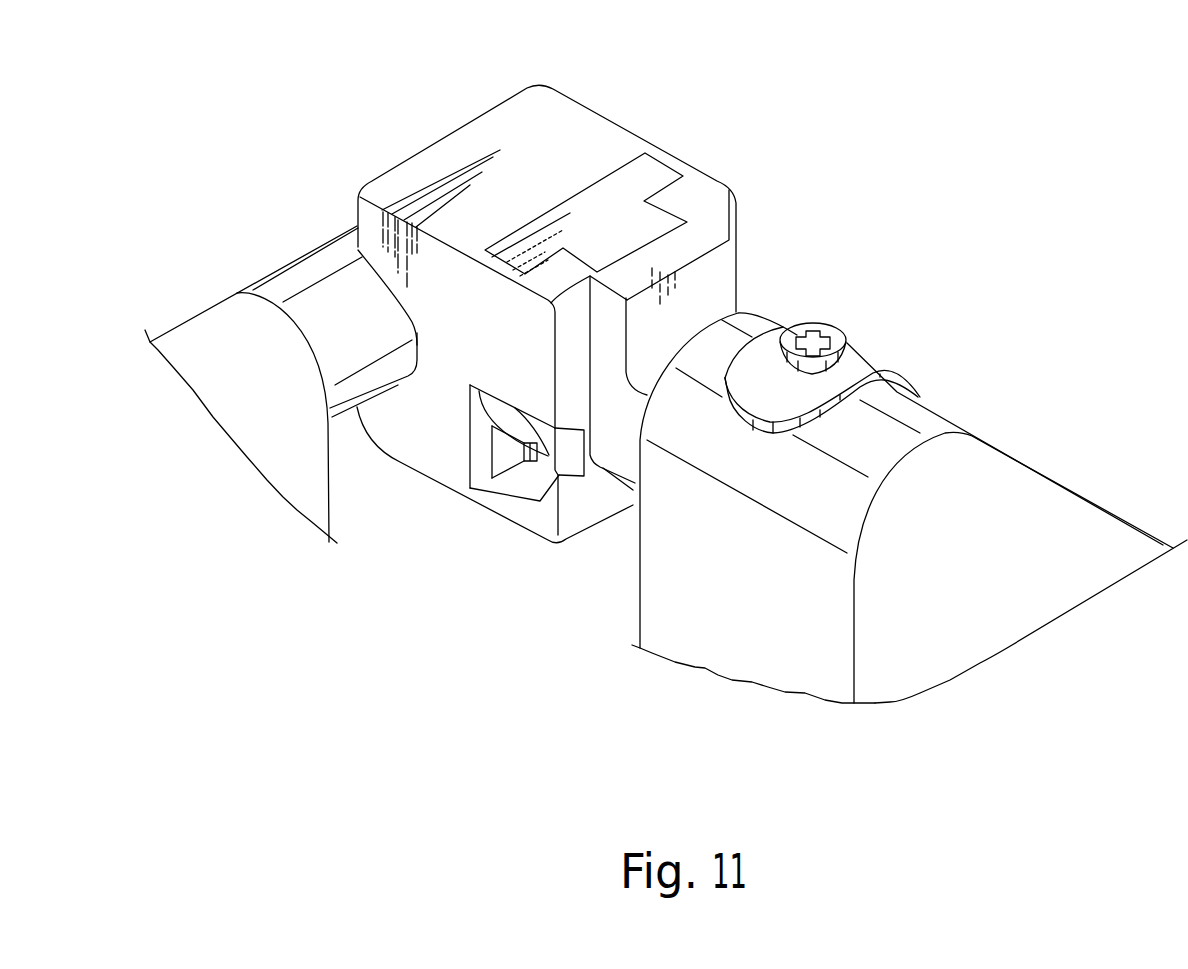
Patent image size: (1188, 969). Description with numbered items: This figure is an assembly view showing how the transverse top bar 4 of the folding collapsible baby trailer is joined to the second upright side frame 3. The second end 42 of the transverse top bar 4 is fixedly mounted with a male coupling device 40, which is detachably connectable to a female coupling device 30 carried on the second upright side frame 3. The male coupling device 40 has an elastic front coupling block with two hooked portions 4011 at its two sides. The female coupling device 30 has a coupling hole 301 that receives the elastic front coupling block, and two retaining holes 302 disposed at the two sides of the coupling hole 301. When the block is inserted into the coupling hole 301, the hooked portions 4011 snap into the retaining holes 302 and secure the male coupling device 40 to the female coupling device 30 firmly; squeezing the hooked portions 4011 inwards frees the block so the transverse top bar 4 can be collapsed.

The second upright side frame 3 is at (300, 250).
The transverse top bar 4 is at (1007, 435).
The female coupling device 30 is at (472, 121).
The male coupling device 40 is at (638, 240).
The second end 42 is at (755, 314).
The coupling hole 301 is at (510, 421).
The retaining holes 302 is at (520, 494).
The hooked portions 4011 is at (510, 421).